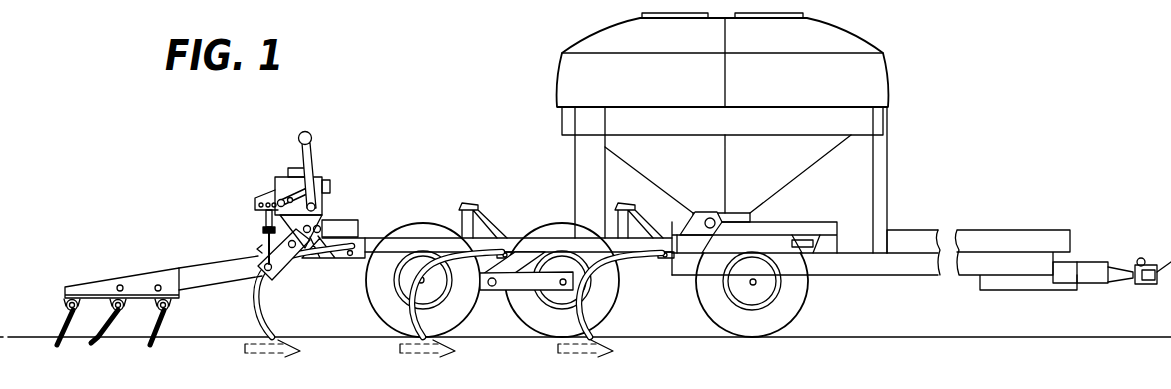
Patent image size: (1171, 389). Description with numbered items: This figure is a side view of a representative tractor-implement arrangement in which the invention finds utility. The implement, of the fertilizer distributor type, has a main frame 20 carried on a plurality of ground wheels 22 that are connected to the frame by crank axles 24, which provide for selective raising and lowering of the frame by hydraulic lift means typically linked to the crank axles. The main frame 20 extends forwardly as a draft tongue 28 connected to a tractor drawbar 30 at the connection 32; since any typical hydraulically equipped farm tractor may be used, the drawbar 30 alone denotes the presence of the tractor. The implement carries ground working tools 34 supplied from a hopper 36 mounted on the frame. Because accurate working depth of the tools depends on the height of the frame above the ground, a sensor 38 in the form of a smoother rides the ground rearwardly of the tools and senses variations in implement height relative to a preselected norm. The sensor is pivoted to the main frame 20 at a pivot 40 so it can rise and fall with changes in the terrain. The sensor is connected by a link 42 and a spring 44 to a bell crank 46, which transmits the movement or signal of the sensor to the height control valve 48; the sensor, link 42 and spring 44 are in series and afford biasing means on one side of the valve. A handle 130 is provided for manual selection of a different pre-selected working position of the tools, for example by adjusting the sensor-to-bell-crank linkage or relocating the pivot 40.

The main frame 20 is at (893, 276).
The ground wheels 22 is at (535, 334).
The crank axles 24 is at (518, 299).
The draft tongue 28 is at (1092, 288).
The tractor drawbar 30 is at (1142, 259).
The connection 32 is at (1140, 287).
The ground working tools 34 is at (258, 306).
The hopper 36 is at (889, 80).
The sensor 38 is at (133, 271).
The pivot 40 is at (288, 259).
The link 42 is at (262, 240).
The spring 44 is at (264, 215).
The bell crank 46 is at (268, 193).
The height control valve 48 is at (284, 185).
The handle 130 is at (307, 132).